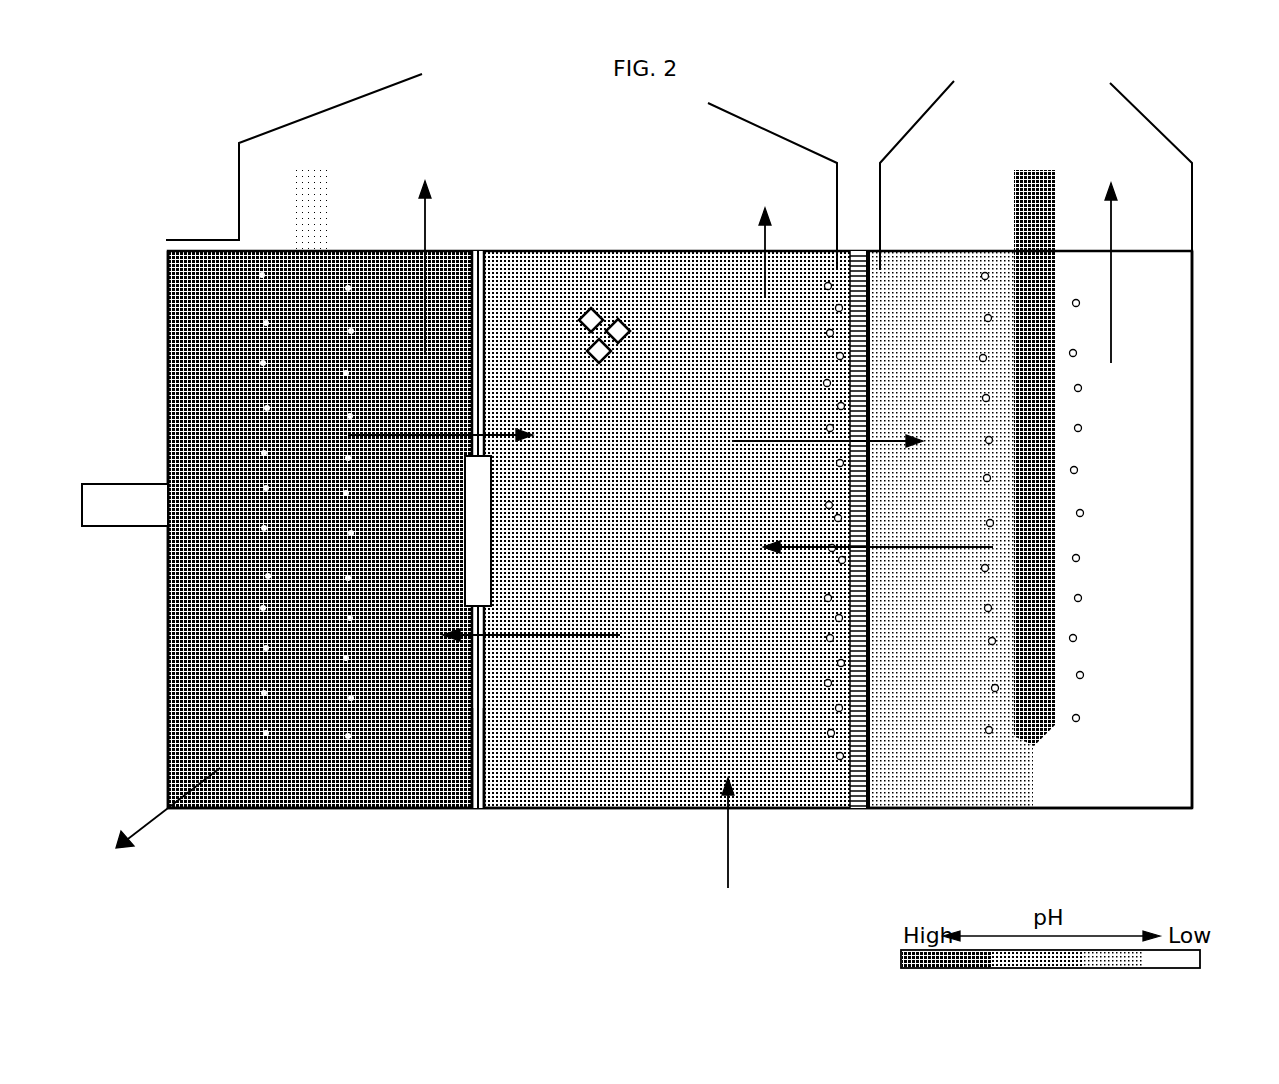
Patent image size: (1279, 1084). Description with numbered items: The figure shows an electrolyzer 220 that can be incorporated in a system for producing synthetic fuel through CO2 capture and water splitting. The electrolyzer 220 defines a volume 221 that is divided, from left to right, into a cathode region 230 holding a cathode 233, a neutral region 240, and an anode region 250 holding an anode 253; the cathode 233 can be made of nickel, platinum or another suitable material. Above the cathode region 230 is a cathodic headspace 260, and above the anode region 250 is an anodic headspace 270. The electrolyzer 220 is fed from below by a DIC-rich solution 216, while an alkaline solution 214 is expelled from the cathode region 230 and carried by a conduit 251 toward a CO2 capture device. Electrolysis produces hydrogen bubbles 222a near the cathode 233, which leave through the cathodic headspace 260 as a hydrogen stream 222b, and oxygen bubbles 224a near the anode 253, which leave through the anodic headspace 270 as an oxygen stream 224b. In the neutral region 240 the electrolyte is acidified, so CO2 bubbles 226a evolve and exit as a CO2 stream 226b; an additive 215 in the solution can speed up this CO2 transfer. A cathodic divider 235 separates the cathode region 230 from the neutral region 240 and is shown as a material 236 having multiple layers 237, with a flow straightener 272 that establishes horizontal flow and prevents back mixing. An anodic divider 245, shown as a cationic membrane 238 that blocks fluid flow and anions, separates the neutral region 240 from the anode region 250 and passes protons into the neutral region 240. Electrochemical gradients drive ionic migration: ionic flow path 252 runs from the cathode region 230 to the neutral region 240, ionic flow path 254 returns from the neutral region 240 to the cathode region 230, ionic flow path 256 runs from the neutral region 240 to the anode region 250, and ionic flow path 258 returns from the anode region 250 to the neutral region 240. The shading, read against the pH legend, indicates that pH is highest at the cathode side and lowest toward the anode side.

The electrolyzer 220 is at (192, 112).
The cathodic headspace 260 is at (566, 128).
The anodic headspace 270 is at (990, 133).
The neutral region 240 is at (615, 765).
The cathode region 230 is at (160, 340).
The volume 221 is at (240, 800).
The anode region 250 is at (1152, 723).
The conduit 251 is at (105, 520).
The cathode 233 is at (295, 190).
The anode 253 is at (1030, 182).
The hydrogen bubbles 222a is at (340, 487).
The hydrogen stream 222b is at (432, 256).
The CO2 bubbles 226a is at (823, 630).
The CO2 stream 226b is at (771, 239).
The oxygen bubbles 224a is at (1068, 420).
The oxygen stream 224b is at (1118, 264).
The additive 215 is at (598, 348).
The layers 237 is at (465, 768).
The material 236 is at (468, 800).
The cathodic divider 235 is at (477, 800).
The flow straightener 272 is at (483, 487).
The cationic membrane 238 is at (848, 240).
The anodic divider 245 is at (852, 800).
The DIC-rich solution 216 is at (729, 853).
The alkaline solution 214 is at (148, 819).
The ionic flow path 252 is at (440, 424).
The ionic flow path 254 is at (531, 625).
The ionic flow path 256 is at (828, 432).
The ionic flow path 258 is at (878, 537).